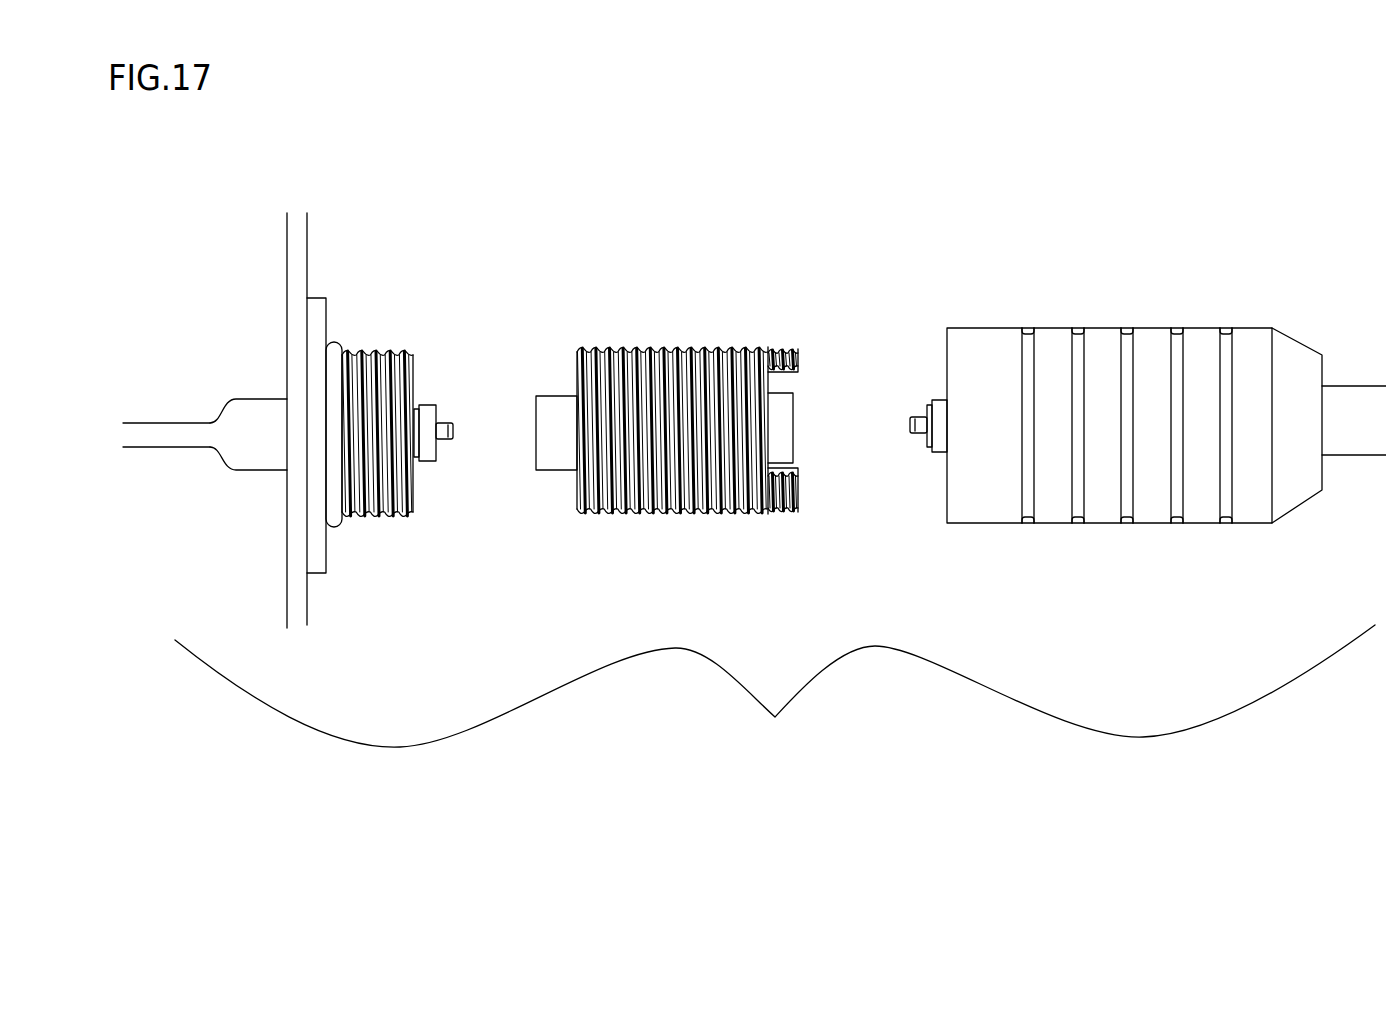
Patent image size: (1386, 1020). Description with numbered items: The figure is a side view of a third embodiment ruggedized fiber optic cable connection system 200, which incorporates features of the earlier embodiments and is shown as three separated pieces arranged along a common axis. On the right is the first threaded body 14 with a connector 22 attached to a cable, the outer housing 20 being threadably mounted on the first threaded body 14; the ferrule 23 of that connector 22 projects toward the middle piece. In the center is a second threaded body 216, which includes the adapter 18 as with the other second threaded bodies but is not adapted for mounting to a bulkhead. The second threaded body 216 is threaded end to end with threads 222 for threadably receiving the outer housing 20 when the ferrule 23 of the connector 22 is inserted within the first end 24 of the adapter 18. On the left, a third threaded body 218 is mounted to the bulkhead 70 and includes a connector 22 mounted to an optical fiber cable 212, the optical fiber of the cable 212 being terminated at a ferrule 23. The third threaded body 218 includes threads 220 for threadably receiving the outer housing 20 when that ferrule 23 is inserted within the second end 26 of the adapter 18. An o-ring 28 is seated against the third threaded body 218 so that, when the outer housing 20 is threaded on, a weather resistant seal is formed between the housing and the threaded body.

The bulkhead 70 is at (292, 260).
The third threaded body 218 is at (322, 315).
The o-ring 28 is at (338, 345).
The threads 220 is at (374, 519).
The ferrule 23 is at (445, 434).
The connector 22 is at (253, 407).
The optical fiber cable 212 is at (165, 427).
The adapter 18 is at (505, 396).
The second end 26 is at (577, 489).
The second threaded body 216 is at (663, 347).
The threads 222 is at (645, 518).
The first end 24 is at (800, 365).
The first threaded body 14 is at (944, 347).
The outer housing 20 is at (1147, 325).
The system 200 is at (775, 688).